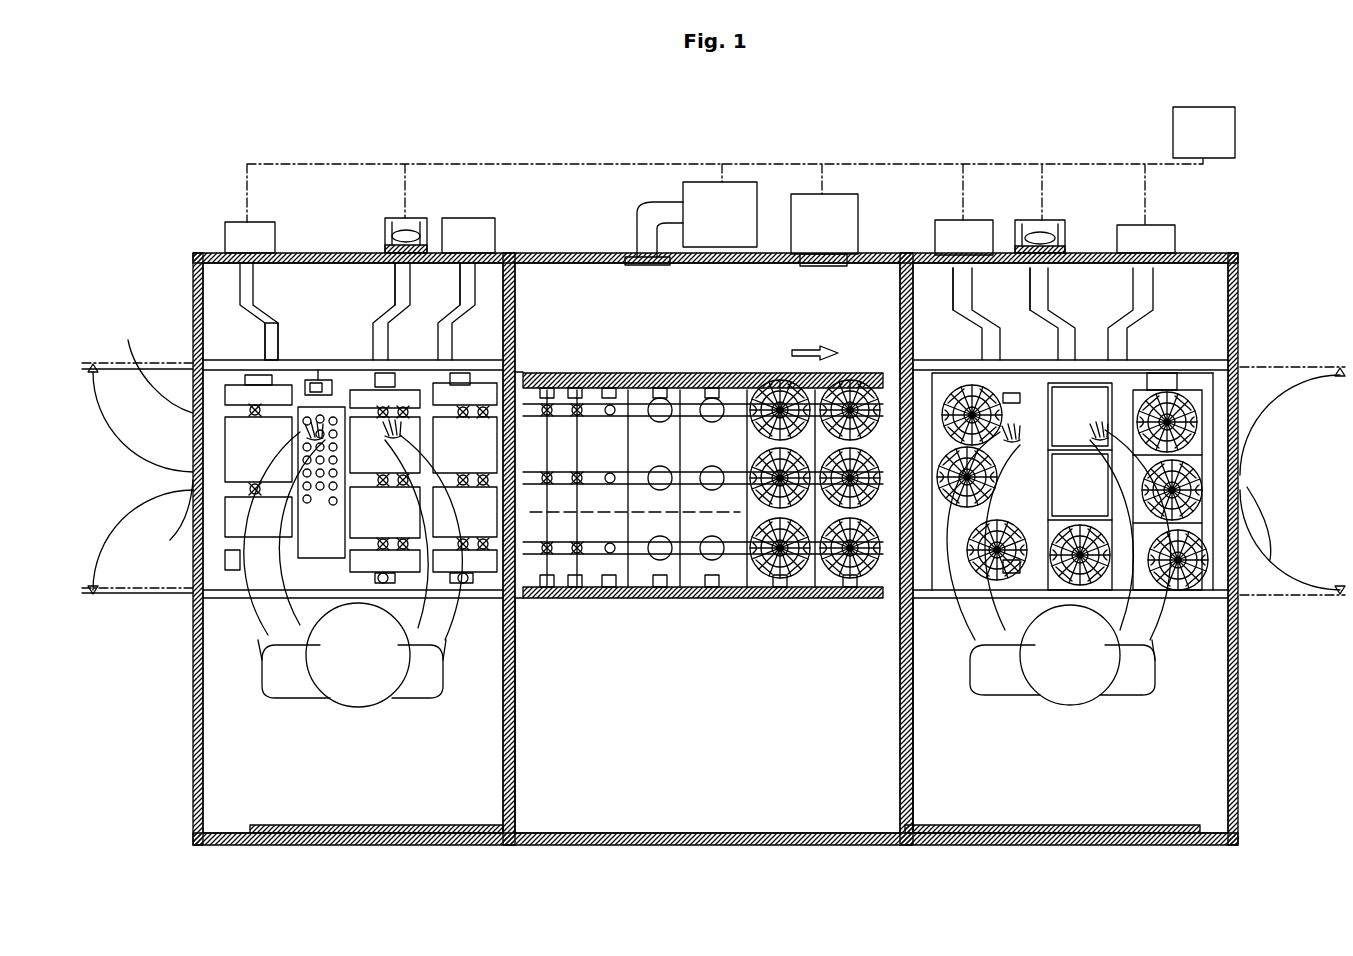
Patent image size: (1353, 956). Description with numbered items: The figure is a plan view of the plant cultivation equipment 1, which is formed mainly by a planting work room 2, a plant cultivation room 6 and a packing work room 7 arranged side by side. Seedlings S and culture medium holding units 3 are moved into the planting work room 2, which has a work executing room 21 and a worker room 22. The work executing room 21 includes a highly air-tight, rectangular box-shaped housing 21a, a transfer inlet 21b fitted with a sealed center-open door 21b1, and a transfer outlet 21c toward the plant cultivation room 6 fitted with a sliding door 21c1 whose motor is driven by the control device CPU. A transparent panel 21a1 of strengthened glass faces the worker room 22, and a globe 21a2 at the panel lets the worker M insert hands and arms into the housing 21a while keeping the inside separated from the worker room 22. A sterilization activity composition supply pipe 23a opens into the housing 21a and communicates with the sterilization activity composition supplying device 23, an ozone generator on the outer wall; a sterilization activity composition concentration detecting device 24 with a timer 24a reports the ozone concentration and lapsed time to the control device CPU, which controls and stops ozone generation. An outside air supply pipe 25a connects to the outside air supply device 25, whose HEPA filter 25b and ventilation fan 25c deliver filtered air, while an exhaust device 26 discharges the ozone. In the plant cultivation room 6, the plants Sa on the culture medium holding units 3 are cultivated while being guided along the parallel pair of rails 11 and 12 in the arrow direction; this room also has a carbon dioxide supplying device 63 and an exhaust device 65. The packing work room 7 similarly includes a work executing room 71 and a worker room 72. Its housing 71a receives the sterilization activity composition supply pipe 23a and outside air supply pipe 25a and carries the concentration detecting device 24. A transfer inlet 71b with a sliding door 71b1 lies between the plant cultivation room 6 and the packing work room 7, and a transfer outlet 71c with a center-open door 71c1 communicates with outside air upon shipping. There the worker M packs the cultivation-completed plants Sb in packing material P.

The plant cultivation equipment 1 is at (162, 162).
The planting work room 2 is at (193, 253).
The culture medium holding unit 3 is at (238, 360).
The plant cultivation room 6 is at (560, 255).
The packing work room 7 is at (1215, 250).
The rail 11 is at (735, 590).
The rail 12 is at (735, 372).
The work executing room 21 is at (193, 330).
The housing 21a is at (320, 340).
The transparent panel 21a1 is at (283, 628).
The globe 21a2 is at (457, 593).
The transfer inlet 21b is at (177, 562).
The center-open door 21b1 is at (150, 362).
The transfer outlet 21c is at (530, 600).
The sliding door 21c1 is at (530, 372).
The worker room 22 is at (225, 765).
The sterilization activity composition supplying device 23 is at (470, 218).
The sterilization activity composition supply pipe 23a is at (465, 232).
The sterilization activity composition concentration detecting device 24 is at (318, 365).
The timer 24a is at (290, 360).
The outside air supply device 25 is at (392, 128).
The outside air supply pipe 25a is at (397, 297).
The HEPA filter 25b is at (415, 218).
The ventilation fan 25c is at (400, 218).
The exhaust device 26 is at (268, 232).
The carbon dioxide supplying device 63 is at (700, 183).
The exhaust device 65 is at (812, 196).
The work executing room 71 is at (1235, 360).
The housing 71a is at (1240, 375).
The transfer inlet 71b is at (940, 600).
The sliding door 71b1 is at (892, 367).
The transfer outlet 71c is at (1180, 610).
The center-open door 71c1 is at (1270, 560).
The worker room 72 is at (1210, 732).
The control device CPU is at (741, 166).
The worker M is at (392, 705).
The seedlings S is at (350, 360).
The plants Sa is at (600, 590).
The plants Sb is at (1010, 365).
The packing material P is at (1133, 360).